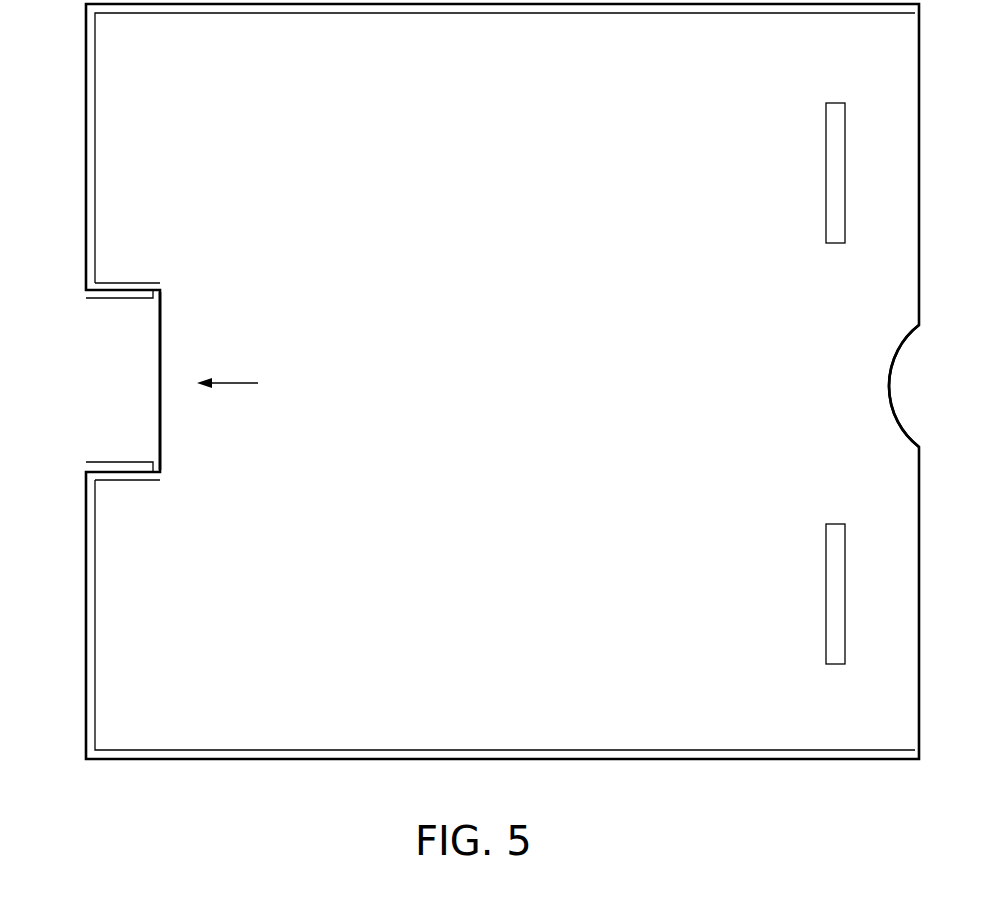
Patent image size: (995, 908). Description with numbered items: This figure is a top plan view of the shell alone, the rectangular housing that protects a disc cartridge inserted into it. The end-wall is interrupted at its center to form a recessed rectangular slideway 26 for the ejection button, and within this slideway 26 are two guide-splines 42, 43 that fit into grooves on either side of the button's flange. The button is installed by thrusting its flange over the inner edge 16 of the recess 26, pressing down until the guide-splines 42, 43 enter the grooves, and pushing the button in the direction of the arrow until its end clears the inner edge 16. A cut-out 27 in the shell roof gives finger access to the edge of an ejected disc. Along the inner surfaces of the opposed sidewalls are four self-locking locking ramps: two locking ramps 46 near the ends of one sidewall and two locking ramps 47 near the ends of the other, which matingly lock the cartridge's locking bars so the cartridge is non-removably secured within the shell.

The inner edge 16 is at (161, 455).
The recessed slideway 26 is at (99, 381).
The cut-out 27 is at (889, 386).
The guide-spline 42 is at (98, 462).
The guide-spline 43 is at (100, 298).
The locking ramp 46 is at (125, 748).
The locking ramp 47 is at (128, 13).